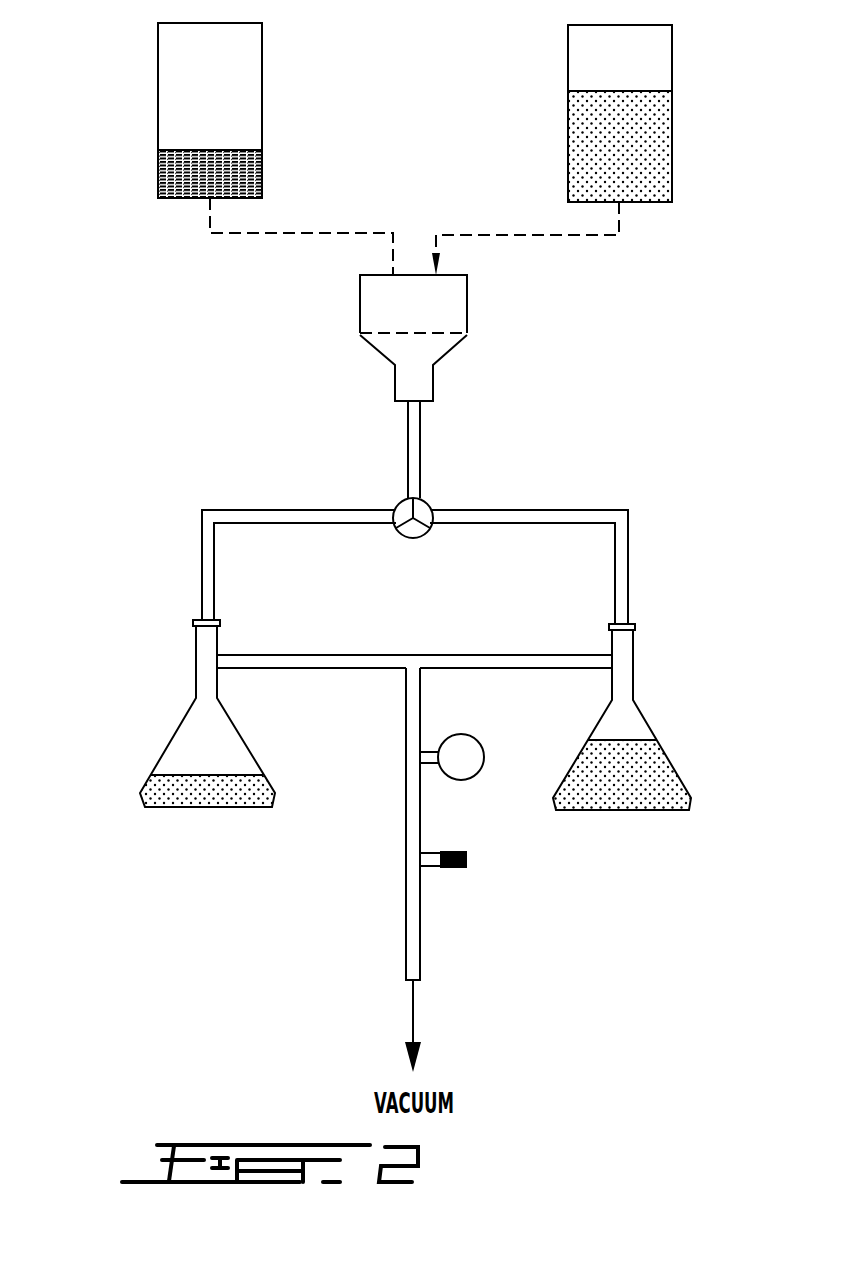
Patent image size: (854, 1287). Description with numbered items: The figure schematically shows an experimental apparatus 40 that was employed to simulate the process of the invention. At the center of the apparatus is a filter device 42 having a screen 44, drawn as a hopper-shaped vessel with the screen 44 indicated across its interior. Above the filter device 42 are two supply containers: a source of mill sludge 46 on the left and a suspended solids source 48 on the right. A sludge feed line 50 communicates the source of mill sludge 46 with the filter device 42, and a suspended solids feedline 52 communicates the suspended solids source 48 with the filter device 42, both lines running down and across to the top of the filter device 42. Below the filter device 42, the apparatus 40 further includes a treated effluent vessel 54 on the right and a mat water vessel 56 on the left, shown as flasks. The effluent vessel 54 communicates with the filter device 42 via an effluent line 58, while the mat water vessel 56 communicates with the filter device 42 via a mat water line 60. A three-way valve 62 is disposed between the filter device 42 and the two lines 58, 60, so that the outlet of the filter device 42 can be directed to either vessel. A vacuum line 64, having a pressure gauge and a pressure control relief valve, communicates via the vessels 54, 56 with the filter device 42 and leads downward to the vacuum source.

The experimental apparatus 40 is at (655, 430).
The filter device 42 is at (467, 299).
The screen 44 is at (378, 343).
The source of mill sludge 46 is at (262, 70).
The suspended solids source 48 is at (672, 118).
The sludge feed line 50 is at (348, 228).
The suspended solids feedline 52 is at (512, 232).
The treated effluent vessel 54 is at (648, 722).
The mat water vessel 56 is at (190, 712).
The effluent line 58 is at (630, 577).
The mat water line 60 is at (201, 556).
The three-way valve 62 is at (428, 499).
The vacuum line 64 is at (405, 801).